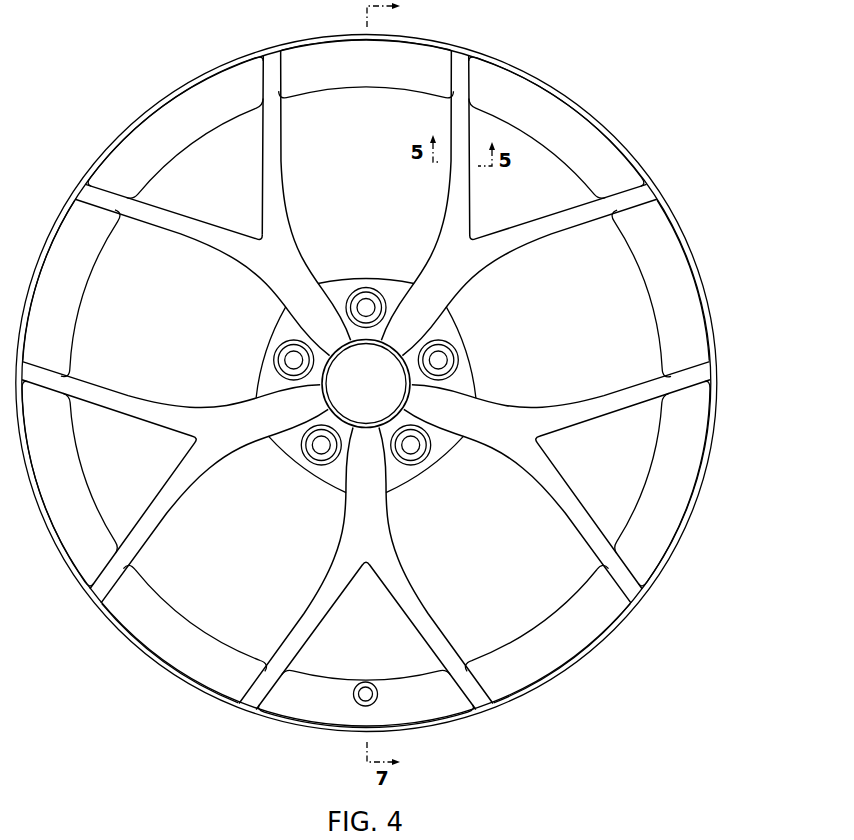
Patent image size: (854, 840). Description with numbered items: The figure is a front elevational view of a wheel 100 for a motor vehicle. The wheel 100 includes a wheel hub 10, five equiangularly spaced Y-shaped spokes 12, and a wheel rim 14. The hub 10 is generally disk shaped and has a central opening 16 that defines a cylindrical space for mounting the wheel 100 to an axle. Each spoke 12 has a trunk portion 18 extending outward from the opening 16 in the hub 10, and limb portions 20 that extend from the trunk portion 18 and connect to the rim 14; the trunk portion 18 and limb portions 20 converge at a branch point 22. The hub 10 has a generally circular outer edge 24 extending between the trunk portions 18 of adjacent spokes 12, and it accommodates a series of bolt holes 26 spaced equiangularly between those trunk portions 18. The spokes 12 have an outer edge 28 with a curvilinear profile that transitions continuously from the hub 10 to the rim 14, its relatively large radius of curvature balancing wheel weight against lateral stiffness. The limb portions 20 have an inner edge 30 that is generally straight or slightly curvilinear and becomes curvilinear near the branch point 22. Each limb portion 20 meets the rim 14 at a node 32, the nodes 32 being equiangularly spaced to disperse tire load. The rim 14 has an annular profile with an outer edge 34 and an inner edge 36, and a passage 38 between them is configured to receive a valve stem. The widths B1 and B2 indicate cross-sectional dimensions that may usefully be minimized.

The wheel 100 is at (641, 58).
The wheel hub 10 is at (304, 468).
The Y-shaped spokes 12 is at (493, 265).
The wheel rim 14 is at (117, 140).
The central opening 16 is at (410, 394).
The trunk portion 18 is at (450, 258).
The limb portions 20 is at (453, 197).
The branch point 22 is at (196, 437).
The outer edge of hub 24 is at (265, 347).
The bolt holes 26 is at (421, 460).
The outer edge of spoke 28 is at (287, 180).
The inner edge of limb portion 30 is at (184, 210).
The node 32 is at (80, 198).
The outer edge of rim 34 is at (175, 686).
The inner edge of rim 36 is at (200, 622).
The passage 38 is at (357, 707).
The width B1 is at (327, 502).
The width B2 is at (407, 623).